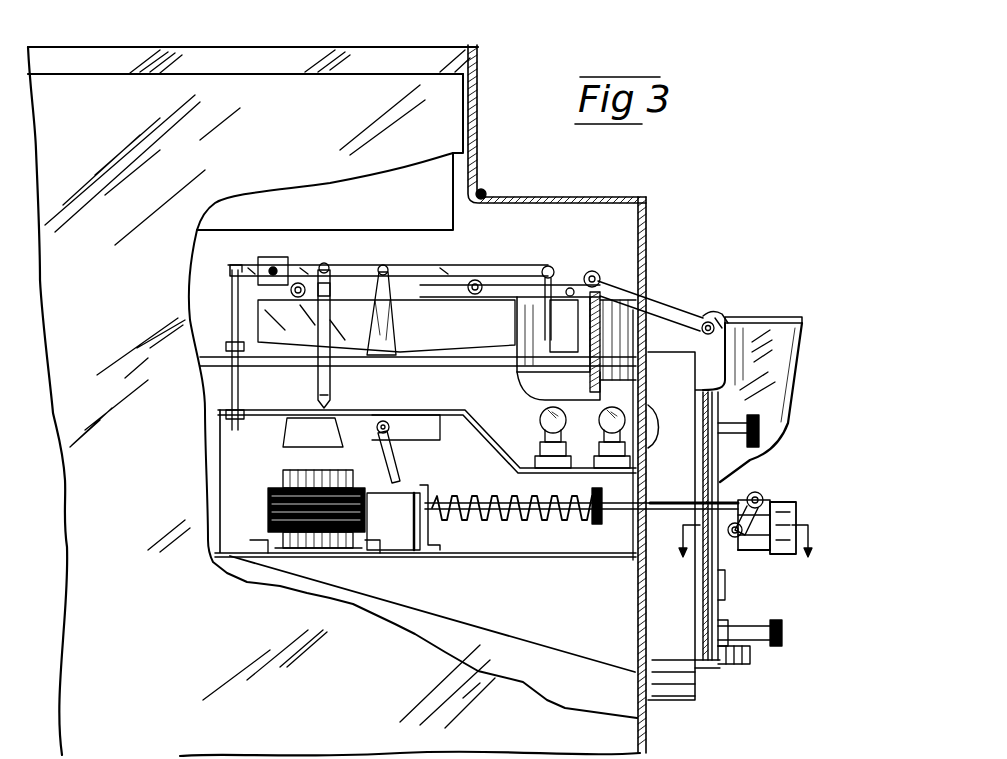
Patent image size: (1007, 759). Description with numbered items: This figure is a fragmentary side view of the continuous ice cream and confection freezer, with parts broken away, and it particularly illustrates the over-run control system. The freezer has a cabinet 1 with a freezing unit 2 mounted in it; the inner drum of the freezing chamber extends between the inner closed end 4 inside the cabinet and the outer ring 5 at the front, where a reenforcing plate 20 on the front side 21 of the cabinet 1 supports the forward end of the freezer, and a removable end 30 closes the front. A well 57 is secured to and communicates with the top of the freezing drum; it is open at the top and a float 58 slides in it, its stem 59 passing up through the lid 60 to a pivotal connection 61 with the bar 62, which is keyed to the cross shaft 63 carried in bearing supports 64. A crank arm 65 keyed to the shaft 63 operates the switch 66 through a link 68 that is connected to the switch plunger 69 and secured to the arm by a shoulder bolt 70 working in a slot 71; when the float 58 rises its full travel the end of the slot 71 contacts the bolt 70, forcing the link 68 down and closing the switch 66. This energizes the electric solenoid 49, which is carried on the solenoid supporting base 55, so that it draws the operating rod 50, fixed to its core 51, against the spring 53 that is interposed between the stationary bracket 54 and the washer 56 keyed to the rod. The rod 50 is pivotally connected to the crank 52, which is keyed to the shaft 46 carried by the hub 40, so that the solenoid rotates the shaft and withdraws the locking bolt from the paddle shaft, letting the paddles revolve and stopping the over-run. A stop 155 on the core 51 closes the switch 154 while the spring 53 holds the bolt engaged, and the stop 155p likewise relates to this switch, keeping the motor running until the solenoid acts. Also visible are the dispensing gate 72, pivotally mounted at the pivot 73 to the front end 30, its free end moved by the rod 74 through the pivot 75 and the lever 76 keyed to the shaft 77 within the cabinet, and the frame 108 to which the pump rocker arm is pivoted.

The cabinet 1 is at (165, 95).
The freezing unit 2 is at (501, 423).
The inner closed end 4 is at (743, 538).
The outer ring 5 is at (684, 445).
The reenforcing plate 20 is at (637, 627).
The front side 21 is at (648, 250).
The removable end 30 is at (720, 412).
The hub 40 is at (792, 502).
The shaft 46 is at (775, 556).
The electric solenoid 49 is at (268, 488).
The operating rod 50 is at (656, 504).
The core 51 is at (408, 518).
The crank 52 is at (760, 520).
The spring 53 is at (485, 496).
The stationary bracket 54 is at (430, 538).
The solenoid supporting base 55 is at (552, 558).
The washer 56 is at (598, 488).
The well 57 is at (612, 318).
The float 58 is at (568, 352).
The stem 59 is at (545, 298).
The lid 60 is at (572, 288).
The pivotal connection 61 is at (430, 268).
The bar 62 is at (470, 282).
The cross shaft 63 is at (388, 270).
The bearing supports 64 is at (381, 315).
The crank arm 65 is at (352, 268).
The switch 66 is at (313, 432).
The link 68 is at (328, 320).
The switch plunger 69 is at (332, 405).
The shoulder bolt 70 is at (322, 268).
The slot 71 is at (330, 288).
The dispensing gate 72 is at (735, 597).
The pivot 73 is at (745, 617).
The rod 74 is at (745, 483).
The pivot 75 is at (748, 660).
The lever 76 is at (690, 300).
The shaft 77 is at (598, 270).
The frame 108 is at (418, 333).
The switch 154 is at (410, 422).
The stop 155 is at (412, 490).
The lever housing 155' 155p is at (400, 470).